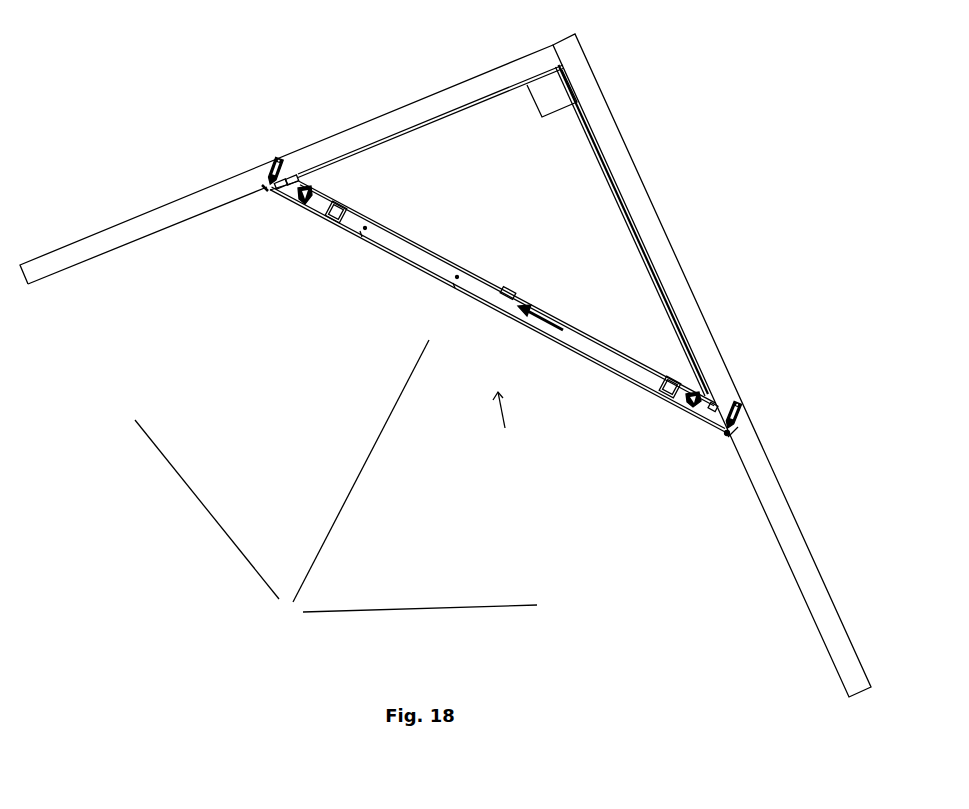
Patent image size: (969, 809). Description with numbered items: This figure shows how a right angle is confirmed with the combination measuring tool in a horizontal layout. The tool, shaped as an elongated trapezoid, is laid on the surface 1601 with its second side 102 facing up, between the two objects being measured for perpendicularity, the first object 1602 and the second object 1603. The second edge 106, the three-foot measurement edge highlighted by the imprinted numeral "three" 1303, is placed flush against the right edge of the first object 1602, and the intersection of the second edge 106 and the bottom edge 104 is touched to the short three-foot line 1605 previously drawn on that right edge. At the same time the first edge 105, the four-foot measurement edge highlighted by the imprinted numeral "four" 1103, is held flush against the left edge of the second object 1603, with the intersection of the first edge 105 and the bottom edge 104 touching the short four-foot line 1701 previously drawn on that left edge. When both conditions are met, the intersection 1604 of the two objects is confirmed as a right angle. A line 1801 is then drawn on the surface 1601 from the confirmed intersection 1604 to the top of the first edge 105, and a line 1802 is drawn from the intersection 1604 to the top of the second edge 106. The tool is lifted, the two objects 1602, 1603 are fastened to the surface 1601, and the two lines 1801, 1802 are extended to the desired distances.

The second side 102 is at (505, 419).
The bottom edge 104 is at (340, 233).
The first edge 105 is at (723, 405).
The second edge 106 is at (282, 160).
The numeral "4" 1103 is at (716, 408).
The numeral "3" 1303 is at (283, 180).
The surface 1601 is at (336, 482).
The first object 1602 is at (135, 230).
The second object 1603 is at (803, 565).
The intersection 1604 is at (562, 69).
The short line 1605 is at (263, 184).
The short line 1701 is at (730, 433).
The line 1801 is at (706, 377).
The line 1802 is at (294, 178).